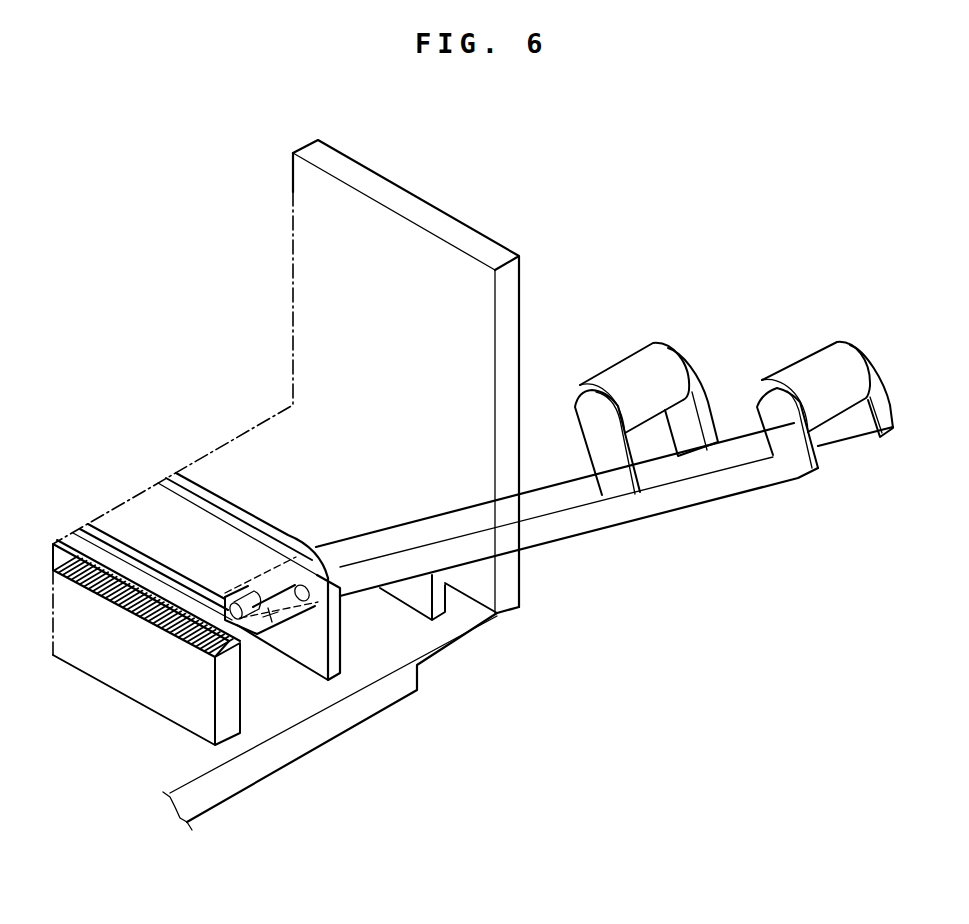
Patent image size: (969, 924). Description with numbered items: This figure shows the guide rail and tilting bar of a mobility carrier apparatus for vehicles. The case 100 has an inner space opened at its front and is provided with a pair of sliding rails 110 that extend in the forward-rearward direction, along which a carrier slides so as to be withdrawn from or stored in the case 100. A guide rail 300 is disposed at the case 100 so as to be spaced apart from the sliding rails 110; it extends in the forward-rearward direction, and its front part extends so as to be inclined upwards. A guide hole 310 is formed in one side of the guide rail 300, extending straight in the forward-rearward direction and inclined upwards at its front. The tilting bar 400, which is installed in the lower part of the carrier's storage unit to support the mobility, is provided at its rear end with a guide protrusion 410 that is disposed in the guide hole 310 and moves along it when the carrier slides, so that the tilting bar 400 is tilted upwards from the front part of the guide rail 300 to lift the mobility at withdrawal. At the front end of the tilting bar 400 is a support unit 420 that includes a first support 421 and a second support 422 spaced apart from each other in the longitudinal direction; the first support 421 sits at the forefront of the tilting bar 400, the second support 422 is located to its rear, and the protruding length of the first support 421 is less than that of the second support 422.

The case 100 is at (447, 207).
The sliding rails 110 is at (192, 690).
The guide rail 300 is at (335, 636).
The guide hole 310 is at (270, 620).
The tilting bar 400 is at (592, 513).
The guide protrusion 410 is at (303, 604).
The support unit 420 is at (734, 340).
The first support 421 is at (825, 356).
The second support 422 is at (647, 354).